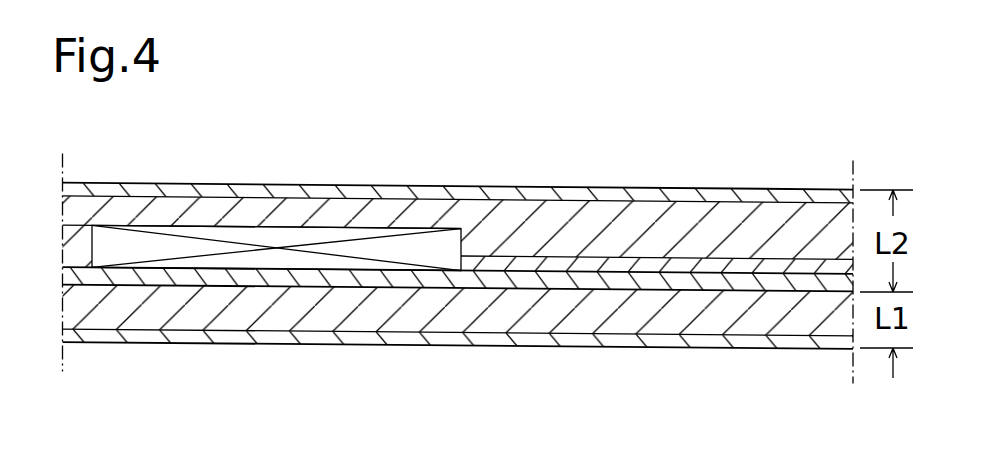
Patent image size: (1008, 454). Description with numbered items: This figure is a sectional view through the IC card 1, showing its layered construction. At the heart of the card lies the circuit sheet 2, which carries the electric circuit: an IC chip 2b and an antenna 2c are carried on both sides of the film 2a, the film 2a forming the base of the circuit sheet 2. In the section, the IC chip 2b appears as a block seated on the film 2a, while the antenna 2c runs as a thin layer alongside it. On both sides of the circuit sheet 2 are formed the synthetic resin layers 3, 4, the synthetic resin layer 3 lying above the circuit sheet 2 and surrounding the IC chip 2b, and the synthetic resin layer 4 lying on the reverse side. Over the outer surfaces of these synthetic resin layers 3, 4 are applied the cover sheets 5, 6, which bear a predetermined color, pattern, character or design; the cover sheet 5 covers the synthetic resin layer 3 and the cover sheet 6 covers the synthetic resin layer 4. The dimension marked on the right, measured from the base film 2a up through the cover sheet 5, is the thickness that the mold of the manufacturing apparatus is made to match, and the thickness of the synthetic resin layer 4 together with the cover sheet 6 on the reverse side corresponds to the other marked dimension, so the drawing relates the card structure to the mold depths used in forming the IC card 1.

The IC card 1 is at (757, 173).
The circuit sheet 2 is at (458, 188).
The film 2a is at (518, 280).
The IC chip 2b is at (402, 247).
The antenna 2c is at (483, 260).
The synthetic resin layer 3 is at (168, 212).
The synthetic resin layer 4 is at (317, 320).
The cover sheet 5 is at (223, 192).
The cover sheet 6 is at (400, 345).